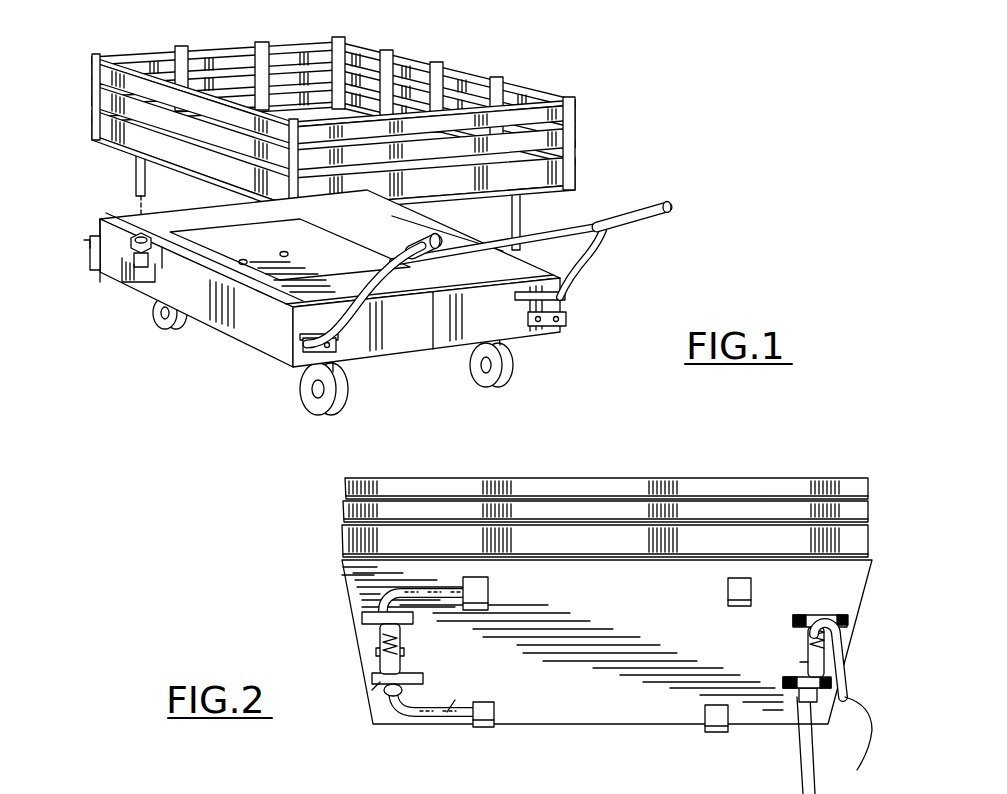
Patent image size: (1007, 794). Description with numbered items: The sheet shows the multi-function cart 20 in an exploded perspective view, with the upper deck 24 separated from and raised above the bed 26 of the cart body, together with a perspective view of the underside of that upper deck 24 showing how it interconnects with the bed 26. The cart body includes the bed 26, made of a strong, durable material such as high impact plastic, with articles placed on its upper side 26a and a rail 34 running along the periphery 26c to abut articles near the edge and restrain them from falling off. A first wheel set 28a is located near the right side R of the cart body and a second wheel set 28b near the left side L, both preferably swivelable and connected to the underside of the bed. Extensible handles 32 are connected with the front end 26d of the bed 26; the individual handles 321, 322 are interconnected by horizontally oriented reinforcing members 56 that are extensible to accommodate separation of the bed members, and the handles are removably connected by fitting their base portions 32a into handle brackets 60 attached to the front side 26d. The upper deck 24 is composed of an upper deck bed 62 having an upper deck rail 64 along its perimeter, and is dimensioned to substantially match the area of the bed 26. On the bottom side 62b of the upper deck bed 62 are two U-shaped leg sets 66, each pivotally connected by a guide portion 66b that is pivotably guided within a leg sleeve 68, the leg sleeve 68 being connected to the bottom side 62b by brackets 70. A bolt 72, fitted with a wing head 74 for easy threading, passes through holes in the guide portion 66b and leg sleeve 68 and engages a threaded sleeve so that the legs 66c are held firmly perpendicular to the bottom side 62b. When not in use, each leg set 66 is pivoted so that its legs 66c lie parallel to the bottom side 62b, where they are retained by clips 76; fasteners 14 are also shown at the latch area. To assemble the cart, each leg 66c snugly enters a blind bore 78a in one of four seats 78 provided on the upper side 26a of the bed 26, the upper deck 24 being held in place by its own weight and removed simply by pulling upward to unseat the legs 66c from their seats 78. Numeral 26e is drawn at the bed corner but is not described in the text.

In FIG. 2, the fastener 14 is at (365, 636).
In FIG. 1, the multi-function cart 20 is at (700, 140).
In FIG. 1, the upper deck 24 is at (364, 125).
In FIG. 2, the upper deck 24 is at (566, 577).
In FIG. 1, the bed 26 is at (310, 315).
In FIG. 1, the upper side 26a is at (267, 322).
In FIG. 1, the periphery 26c is at (98, 236).
In FIG. 1, the front end 26d is at (414, 346).
In FIG. 1, the corner bracket 26e is at (94, 250).
In FIG. 1, the first wheel set 28a is at (180, 328).
In FIG. 1, the second wheel set 28b is at (512, 373).
In FIG. 1, the extensible handles 32 is at (533, 256).
In FIG. 1, the base portions 32a is at (307, 362).
In FIG. 1, the handle 321 is at (443, 224).
In FIG. 1, the handle 322 is at (673, 210).
In FIG. 1, the rail 34 is at (313, 235).
In FIG. 1, the reinforcing members 56 is at (572, 272).
In FIG. 1, the handle brackets 60 is at (338, 357).
In FIG. 1, the upper deck bed 62 is at (316, 106).
In FIG. 2, the upper deck bed 62 is at (360, 558).
In FIG. 2, the bottom side 62b is at (655, 618).
In FIG. 1, the upper deck rail 64 is at (578, 165).
In FIG. 2, the upper deck rail 64 is at (346, 505).
In FIG. 2, the U-shaped leg sets 66 is at (393, 704).
In FIG. 2, the guide portion 66b is at (360, 697).
In FIG. 1, the legs 66c is at (137, 163).
In FIG. 2, the legs 66c is at (500, 597).
In FIG. 2, the leg sleeve 68 is at (405, 654).
In FIG. 2, the brackets 70 is at (375, 602).
In FIG. 2, the bolt 72 is at (373, 663).
In FIG. 2, the wing head 74 is at (393, 660).
In FIG. 2, the clips 76 is at (498, 580).
In FIG. 1, the seats 78 is at (124, 272).
In FIG. 1, the blind bore 78a is at (143, 236).
In FIG. 1, the right side R is at (293, 292).
In FIG. 1, the left side L is at (565, 328).